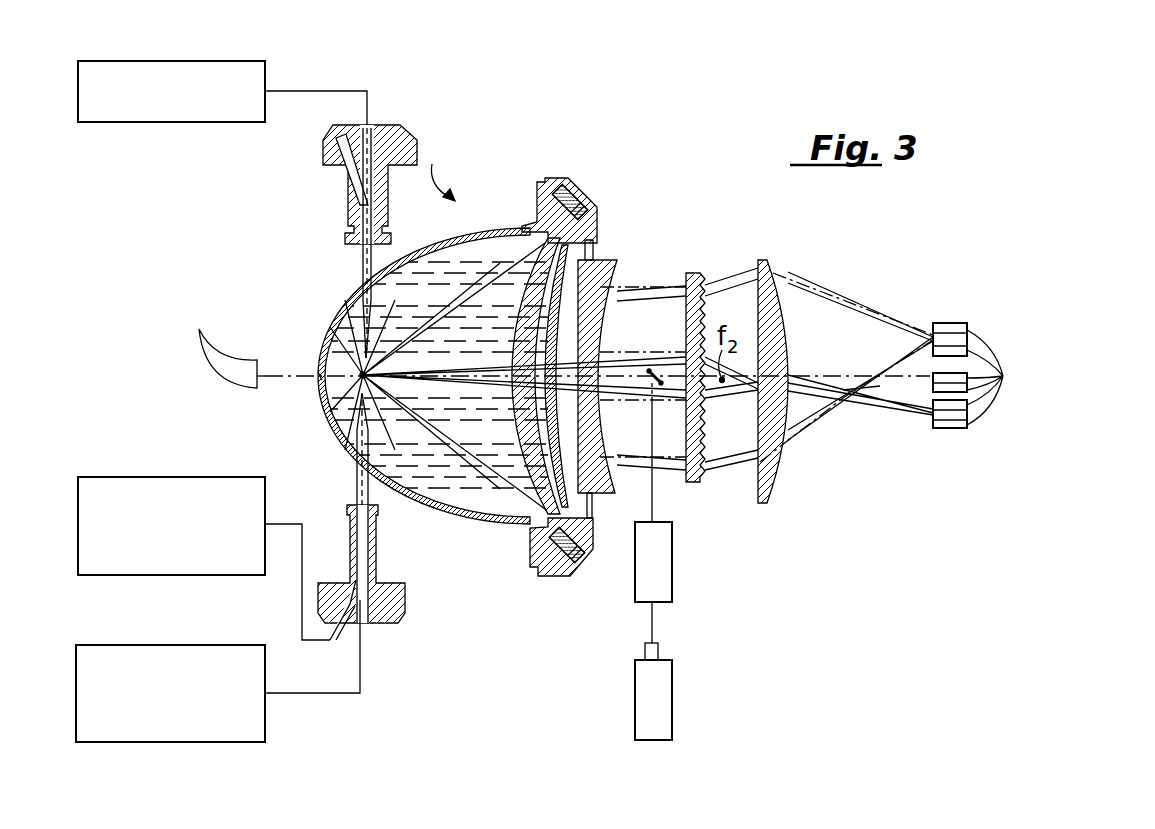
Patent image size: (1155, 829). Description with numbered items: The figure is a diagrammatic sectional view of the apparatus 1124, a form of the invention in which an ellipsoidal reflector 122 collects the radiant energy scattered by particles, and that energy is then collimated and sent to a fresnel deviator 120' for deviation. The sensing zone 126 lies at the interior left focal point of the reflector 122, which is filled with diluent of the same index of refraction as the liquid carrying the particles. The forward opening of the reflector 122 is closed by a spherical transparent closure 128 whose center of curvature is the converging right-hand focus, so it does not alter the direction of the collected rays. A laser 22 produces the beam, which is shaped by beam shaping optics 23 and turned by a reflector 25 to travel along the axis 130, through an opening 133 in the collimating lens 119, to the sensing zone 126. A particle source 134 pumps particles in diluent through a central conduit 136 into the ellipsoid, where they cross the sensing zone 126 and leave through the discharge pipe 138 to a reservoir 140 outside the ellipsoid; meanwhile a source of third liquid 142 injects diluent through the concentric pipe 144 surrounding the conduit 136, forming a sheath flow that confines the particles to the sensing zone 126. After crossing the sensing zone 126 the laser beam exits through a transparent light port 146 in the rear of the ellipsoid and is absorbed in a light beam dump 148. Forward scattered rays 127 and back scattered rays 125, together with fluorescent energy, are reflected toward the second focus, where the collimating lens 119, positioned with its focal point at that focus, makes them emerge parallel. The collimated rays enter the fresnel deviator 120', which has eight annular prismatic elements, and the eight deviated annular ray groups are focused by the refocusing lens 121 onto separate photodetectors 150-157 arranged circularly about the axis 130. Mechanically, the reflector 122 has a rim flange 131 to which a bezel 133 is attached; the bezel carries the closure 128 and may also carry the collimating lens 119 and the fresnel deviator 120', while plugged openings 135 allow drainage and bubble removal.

The reservoir 140 is at (228, 61).
The discharge pipe 138 is at (362, 259).
The apparatus 1124 is at (466, 171).
The back scattered rays 125 is at (467, 273).
The rim flange 131 is at (535, 212).
The bezel / opening 133 is at (563, 185).
The plugged openings 135 is at (575, 200).
The collimating lens 119 is at (603, 260).
The fresnel deviator 120' is at (721, 351).
The refocusing lens 121 is at (764, 262).
The light beam dump 148 is at (222, 343).
The forward scattered rays 127 is at (340, 340).
The transparent light port 146 is at (318, 372).
The sensing zone 126 is at (333, 402).
The spherical transparent closure 128 is at (580, 390).
The reflector 25 is at (650, 380).
The axis 130 is at (879, 385).
The photodetectors 150-157 is at (1026, 375).
The source of third liquid 142 is at (212, 477).
The concentric pipe 144 is at (360, 481).
The central conduit 136 is at (368, 557).
The particle source 134 is at (235, 645).
The ellipsoidal reflector 122 is at (512, 520).
The beam shaping optics 23 is at (672, 556).
The laser 22 is at (672, 698).